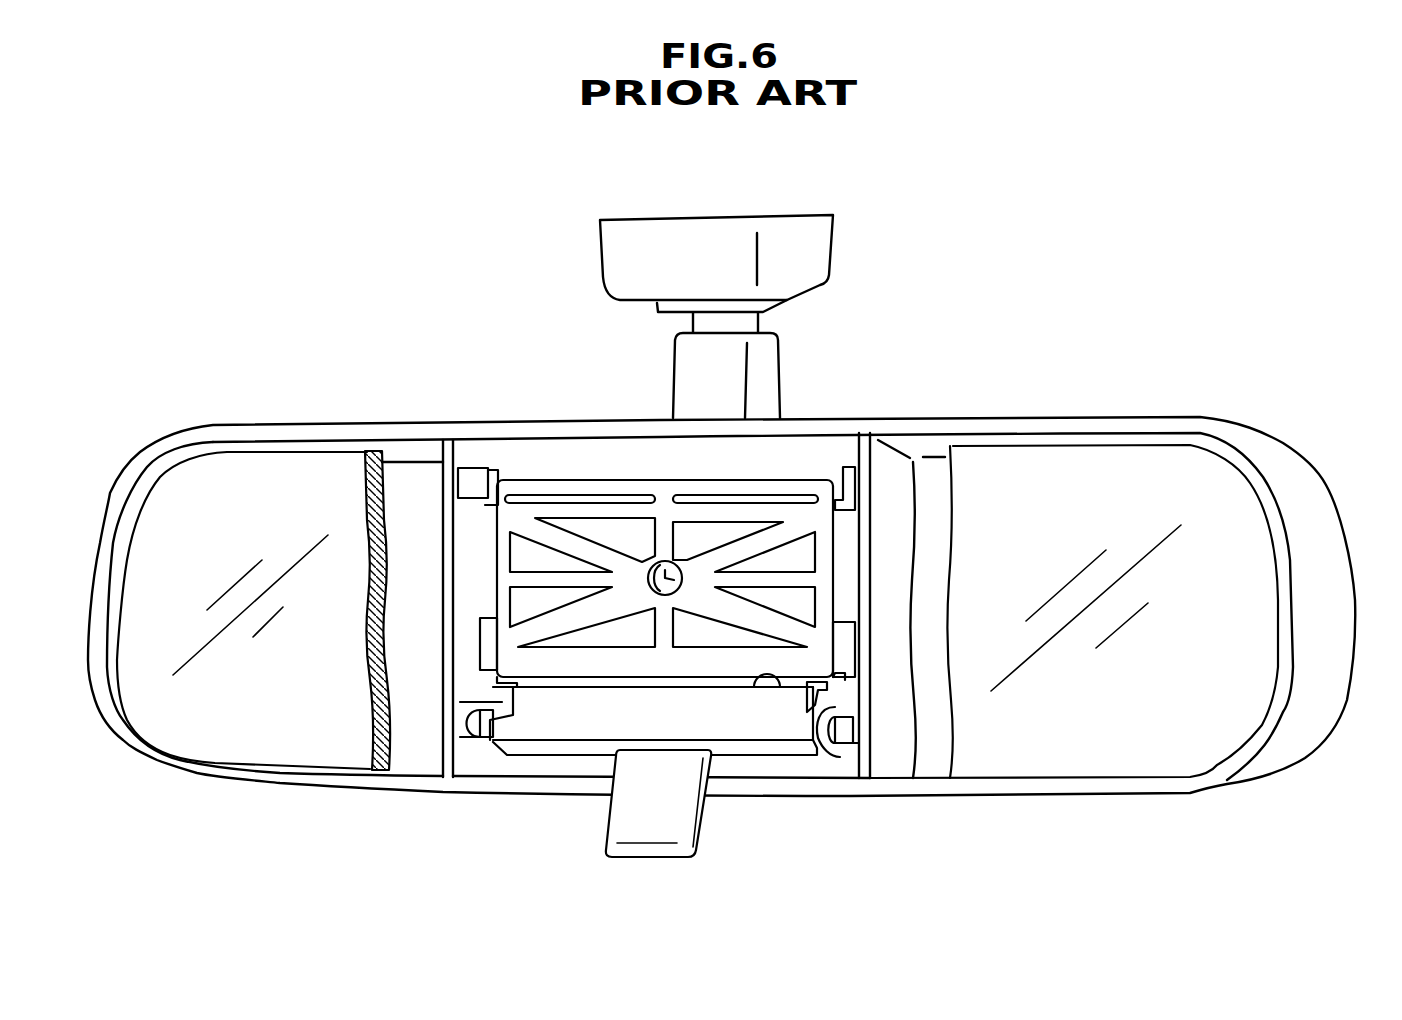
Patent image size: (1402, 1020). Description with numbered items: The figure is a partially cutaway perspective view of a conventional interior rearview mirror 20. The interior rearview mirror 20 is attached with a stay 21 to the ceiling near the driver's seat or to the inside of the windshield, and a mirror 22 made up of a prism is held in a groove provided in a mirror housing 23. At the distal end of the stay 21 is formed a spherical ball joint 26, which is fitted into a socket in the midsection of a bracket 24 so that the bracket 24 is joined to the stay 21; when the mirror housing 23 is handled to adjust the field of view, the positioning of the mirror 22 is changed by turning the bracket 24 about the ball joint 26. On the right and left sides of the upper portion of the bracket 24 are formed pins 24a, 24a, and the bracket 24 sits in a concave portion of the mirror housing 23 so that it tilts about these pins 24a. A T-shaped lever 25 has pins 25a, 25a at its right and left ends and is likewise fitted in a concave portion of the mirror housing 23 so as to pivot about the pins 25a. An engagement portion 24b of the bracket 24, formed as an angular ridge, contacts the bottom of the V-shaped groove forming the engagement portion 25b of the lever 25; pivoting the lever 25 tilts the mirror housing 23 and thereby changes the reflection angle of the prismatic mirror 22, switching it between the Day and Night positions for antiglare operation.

The interior rearview mirror 20 is at (1015, 378).
The stay 21 is at (633, 263).
The mirror 22 is at (277, 527).
The mirror housing 23 is at (1287, 477).
The bracket 24 is at (620, 542).
The pins 24a is at (497, 480).
The engagement portion 24b is at (827, 692).
The lever 25 is at (633, 827).
The pins 25a is at (481, 723).
The engagement portion 25b is at (776, 690).
The ball joint 26 is at (687, 557).